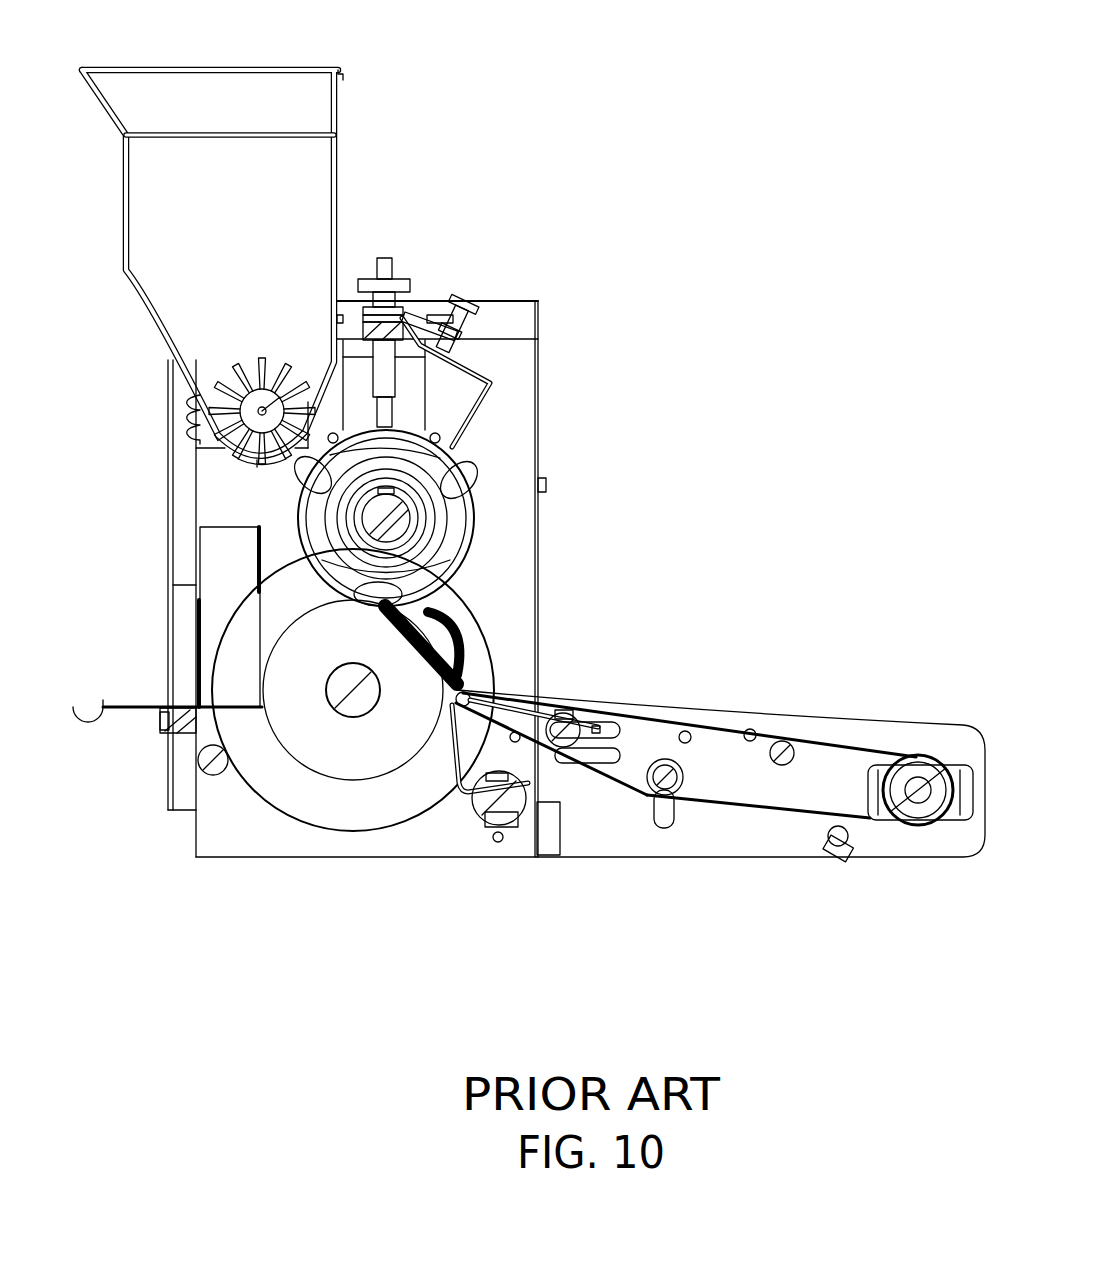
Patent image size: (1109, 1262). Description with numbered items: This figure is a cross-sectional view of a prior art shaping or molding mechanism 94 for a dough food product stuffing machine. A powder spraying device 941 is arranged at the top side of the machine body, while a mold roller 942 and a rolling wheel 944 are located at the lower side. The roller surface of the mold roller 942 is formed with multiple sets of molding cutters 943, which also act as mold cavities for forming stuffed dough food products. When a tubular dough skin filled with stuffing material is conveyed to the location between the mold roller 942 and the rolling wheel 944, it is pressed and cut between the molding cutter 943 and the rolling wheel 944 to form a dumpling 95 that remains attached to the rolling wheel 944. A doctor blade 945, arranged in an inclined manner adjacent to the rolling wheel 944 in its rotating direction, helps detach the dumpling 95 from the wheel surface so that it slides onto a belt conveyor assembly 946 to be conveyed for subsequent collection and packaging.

The shaping or molding mechanism 94 is at (545, 288).
The powder spraying device 941 is at (318, 105).
The mold roller 942 is at (453, 552).
The molding cutters 943 is at (445, 586).
The rolling wheel 944 is at (360, 760).
The doctor blade 945 is at (443, 702).
The belt conveyor assembly 946 is at (775, 725).
The dumpling 95 is at (465, 625).